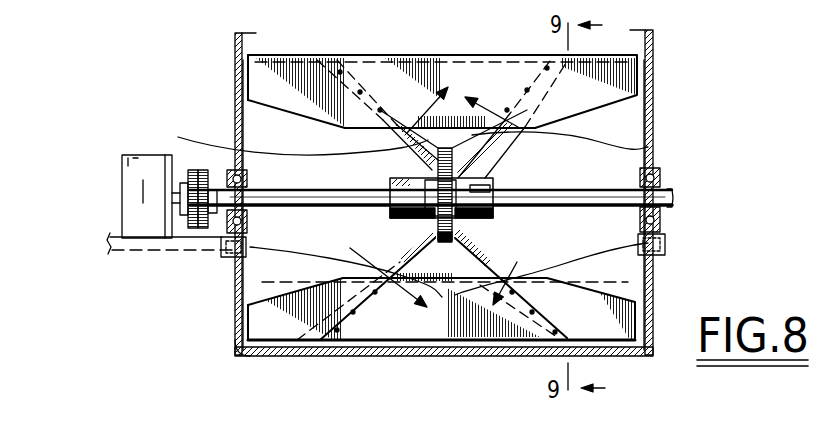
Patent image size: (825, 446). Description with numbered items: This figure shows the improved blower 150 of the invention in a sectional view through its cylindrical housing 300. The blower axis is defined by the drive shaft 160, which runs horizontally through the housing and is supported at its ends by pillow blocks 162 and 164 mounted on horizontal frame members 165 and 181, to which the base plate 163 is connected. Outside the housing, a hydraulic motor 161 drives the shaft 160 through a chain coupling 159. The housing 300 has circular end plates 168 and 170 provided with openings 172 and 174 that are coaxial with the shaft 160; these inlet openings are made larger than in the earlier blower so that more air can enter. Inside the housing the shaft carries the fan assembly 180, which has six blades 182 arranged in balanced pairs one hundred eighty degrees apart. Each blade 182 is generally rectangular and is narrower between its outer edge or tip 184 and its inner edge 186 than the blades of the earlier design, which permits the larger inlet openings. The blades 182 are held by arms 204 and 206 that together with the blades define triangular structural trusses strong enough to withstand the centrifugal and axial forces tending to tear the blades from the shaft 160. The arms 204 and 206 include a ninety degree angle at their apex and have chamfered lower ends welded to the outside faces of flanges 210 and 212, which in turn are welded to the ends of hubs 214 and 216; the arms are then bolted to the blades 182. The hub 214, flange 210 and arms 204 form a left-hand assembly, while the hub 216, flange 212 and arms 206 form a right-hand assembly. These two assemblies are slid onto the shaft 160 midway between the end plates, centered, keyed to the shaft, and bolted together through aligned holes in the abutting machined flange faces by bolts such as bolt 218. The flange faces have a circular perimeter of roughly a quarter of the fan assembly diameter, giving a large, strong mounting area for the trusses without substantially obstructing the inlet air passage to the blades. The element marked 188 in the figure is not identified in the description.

The blower 150 is at (735, 122).
The chain coupling 159 is at (190, 170).
The drive shaft 160 is at (545, 207).
The hydraulic motor 161 is at (146, 155).
The pillow block 162 is at (247, 183).
The base plate 163 is at (145, 250).
The pillow block 164 is at (640, 178).
The horizontal frame member 165 is at (232, 258).
The circular end plate 168 is at (237, 63).
The circular end plate 170 is at (655, 58).
The opening 172 is at (246, 118).
The opening 174 is at (645, 107).
The fan assembly 180 is at (441, 42).
The horizontal frame member 181 is at (655, 255).
The blade 182 is at (270, 72).
The outer edge 184 is at (462, 55).
The inner edge 186 is at (518, 127).
The guide curve 188 is at (250, 97).
The arm 204 is at (418, 140).
The arm 206 is at (480, 140).
The flange 210 is at (445, 242).
The flange 212 is at (450, 242).
The hub 214 is at (392, 180).
The hub 216 is at (495, 186).
The bolt 218 is at (468, 260).
The cylindrical housing 300 is at (243, 358).